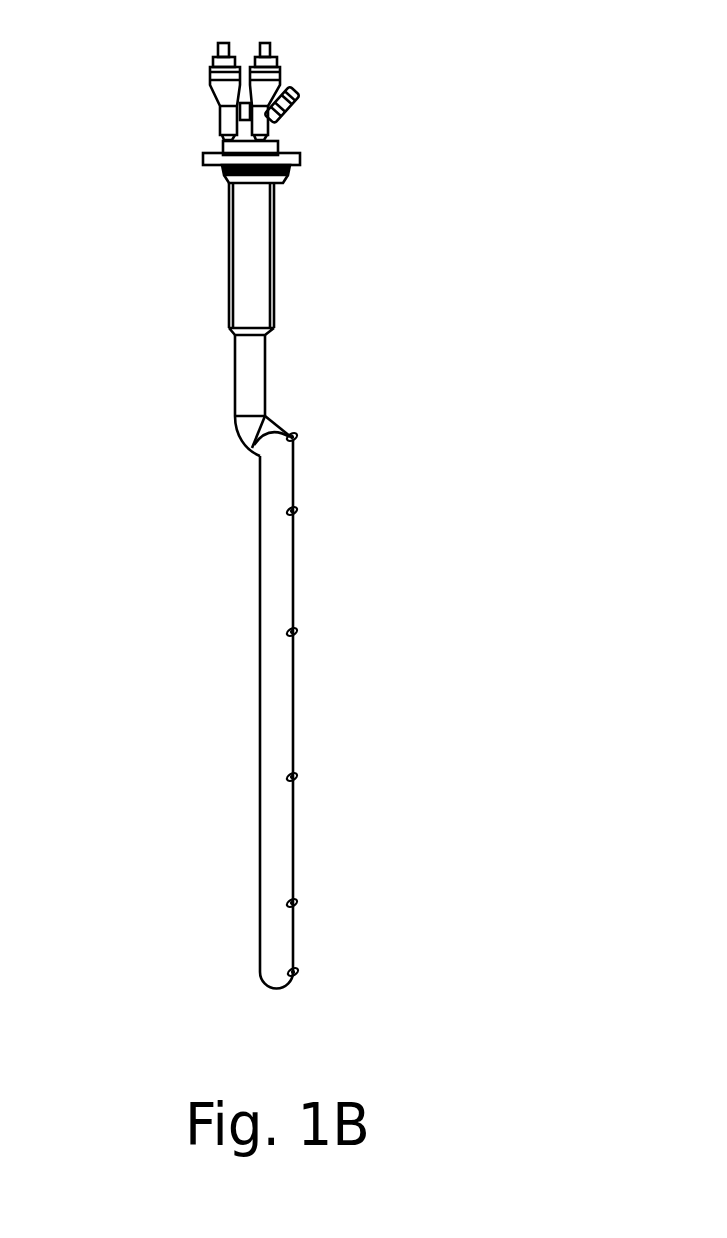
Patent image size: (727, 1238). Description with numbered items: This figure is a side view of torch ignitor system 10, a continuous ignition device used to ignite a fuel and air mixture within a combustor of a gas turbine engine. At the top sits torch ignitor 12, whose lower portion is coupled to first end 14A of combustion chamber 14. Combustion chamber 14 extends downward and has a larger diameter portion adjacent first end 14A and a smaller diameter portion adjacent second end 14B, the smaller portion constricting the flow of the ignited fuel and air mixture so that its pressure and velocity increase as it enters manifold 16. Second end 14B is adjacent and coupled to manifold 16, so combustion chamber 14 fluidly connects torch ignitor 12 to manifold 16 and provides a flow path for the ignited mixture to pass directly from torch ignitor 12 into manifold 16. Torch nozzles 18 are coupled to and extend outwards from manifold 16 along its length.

The torch ignitor system 10 is at (453, 113).
The torch ignitor 12 is at (215, 122).
The combustion chamber 14 is at (228, 305).
The first end 14A is at (222, 188).
The second end 14B is at (237, 443).
The manifold 16 is at (252, 743).
The torch nozzles 18 is at (296, 903).